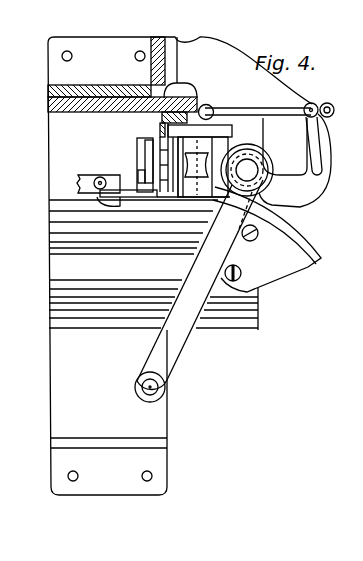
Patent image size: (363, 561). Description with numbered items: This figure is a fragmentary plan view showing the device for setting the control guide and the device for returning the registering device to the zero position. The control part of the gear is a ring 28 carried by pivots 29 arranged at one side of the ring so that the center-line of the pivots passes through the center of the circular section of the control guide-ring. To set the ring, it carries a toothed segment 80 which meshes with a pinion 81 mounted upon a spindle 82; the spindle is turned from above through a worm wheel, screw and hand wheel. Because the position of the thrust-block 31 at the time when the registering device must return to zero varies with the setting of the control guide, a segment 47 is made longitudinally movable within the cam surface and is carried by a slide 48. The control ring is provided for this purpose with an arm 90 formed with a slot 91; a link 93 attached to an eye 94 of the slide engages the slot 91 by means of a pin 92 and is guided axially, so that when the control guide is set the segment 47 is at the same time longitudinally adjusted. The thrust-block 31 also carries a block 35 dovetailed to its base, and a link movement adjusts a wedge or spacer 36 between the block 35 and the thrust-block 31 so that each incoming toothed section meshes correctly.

The ring 28 is at (200, 285).
The pivots 29 is at (152, 387).
The thrust-block 31 is at (196, 164).
The block 35 is at (112, 187).
The wedge or spacer 36 is at (143, 184).
The segment 47 is at (162, 120).
The slide 48 is at (73, 111).
The toothed segment 80 is at (292, 222).
The pinion 81 is at (253, 146).
The spindle 82 is at (247, 170).
The arm 90 is at (295, 160).
The slot 91 is at (316, 152).
The pin 92 is at (305, 118).
The link 93 is at (236, 108).
The eye 94 is at (205, 104).